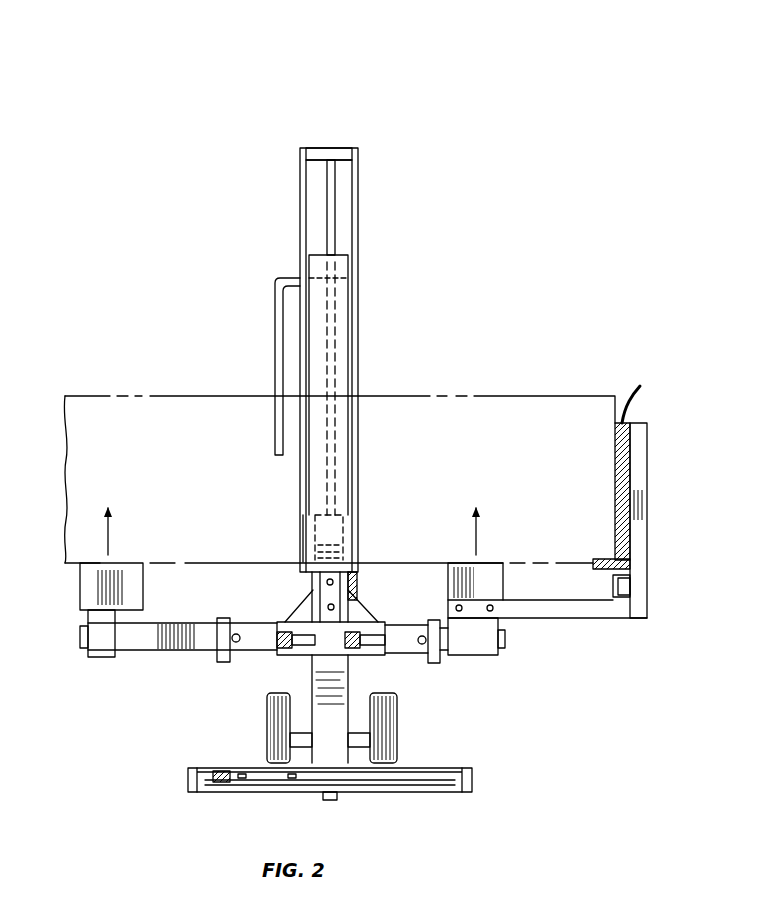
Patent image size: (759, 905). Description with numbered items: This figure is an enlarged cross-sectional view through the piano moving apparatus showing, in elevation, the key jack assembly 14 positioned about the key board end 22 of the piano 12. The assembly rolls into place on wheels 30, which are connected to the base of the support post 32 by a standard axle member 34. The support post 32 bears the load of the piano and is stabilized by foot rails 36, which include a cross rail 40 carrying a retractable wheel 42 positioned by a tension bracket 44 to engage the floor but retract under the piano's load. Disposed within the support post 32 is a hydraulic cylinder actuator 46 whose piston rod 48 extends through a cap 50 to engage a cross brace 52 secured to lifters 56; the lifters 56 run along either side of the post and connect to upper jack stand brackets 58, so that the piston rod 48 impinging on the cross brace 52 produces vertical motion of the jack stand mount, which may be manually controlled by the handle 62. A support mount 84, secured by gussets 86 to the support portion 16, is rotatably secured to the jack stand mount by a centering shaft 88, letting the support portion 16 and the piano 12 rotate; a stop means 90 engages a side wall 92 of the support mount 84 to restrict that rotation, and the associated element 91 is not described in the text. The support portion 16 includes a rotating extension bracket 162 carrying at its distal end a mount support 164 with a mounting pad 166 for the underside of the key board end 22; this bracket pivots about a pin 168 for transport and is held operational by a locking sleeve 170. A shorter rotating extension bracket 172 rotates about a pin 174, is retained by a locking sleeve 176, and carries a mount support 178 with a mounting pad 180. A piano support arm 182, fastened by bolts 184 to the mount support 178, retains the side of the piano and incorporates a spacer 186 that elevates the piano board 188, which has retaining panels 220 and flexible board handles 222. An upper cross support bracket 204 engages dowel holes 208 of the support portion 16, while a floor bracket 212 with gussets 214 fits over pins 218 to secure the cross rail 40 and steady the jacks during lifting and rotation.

The piano 12 is at (400, 394).
The key jack assembly 14 is at (224, 308).
The support portion 16 is at (270, 652).
The key board end 22 is at (185, 563).
The wheels 30 is at (267, 730).
The support post 32 is at (350, 665).
The axle member 34 is at (300, 740).
The foot rails 36 is at (410, 770).
The cross rail 40 is at (405, 778).
The retractable wheel 42 is at (335, 800).
The tension bracket 44 is at (350, 792).
The hydraulic cylinder actuator 46 is at (318, 520).
The piston rod 48 is at (327, 178).
The cap 50 is at (312, 258).
The cross brace 52 is at (336, 155).
The lifters 56 is at (358, 185).
The upper jack stand brackets 58 is at (305, 562).
The handle 62 is at (275, 300).
The support mount 84 is at (352, 574).
The gussets 86 is at (368, 604).
The centering shaft 88 is at (292, 610).
The stop means 90 is at (352, 590).
The link 91 is at (345, 604).
The side wall 92 is at (350, 597).
The rotating extension bracket 162 is at (178, 650).
The mount support 164 is at (100, 635).
The mounting pad 166 is at (95, 580).
The pin 168 is at (236, 634).
The locking sleeve 170 is at (220, 630).
The rotating extension bracket 172 is at (505, 645).
The pin 174 is at (435, 660).
The locking sleeve 176 is at (432, 620).
The mount support 178 is at (498, 625).
The mounting pad 180 is at (503, 580).
The piano support arm 182 is at (647, 485).
The bolts 184 is at (490, 605).
The spacer 186 is at (640, 580).
The piano board 188 is at (620, 435).
The upper cross support bracket 204 is at (383, 656).
The dowel holes 208 is at (300, 648).
The floor bracket 212 is at (213, 778).
The gussets 214 is at (278, 780).
The pins 218 is at (242, 780).
The retaining panels 220 is at (600, 562).
The board handles 222 is at (640, 386).